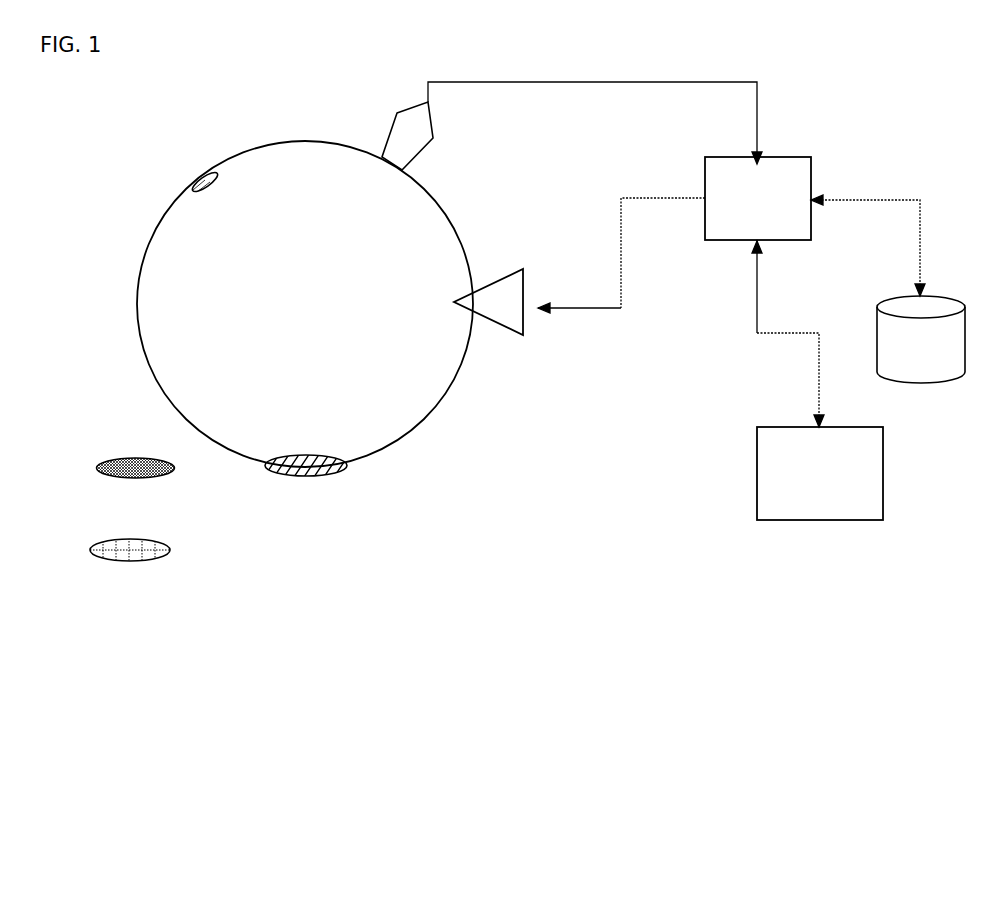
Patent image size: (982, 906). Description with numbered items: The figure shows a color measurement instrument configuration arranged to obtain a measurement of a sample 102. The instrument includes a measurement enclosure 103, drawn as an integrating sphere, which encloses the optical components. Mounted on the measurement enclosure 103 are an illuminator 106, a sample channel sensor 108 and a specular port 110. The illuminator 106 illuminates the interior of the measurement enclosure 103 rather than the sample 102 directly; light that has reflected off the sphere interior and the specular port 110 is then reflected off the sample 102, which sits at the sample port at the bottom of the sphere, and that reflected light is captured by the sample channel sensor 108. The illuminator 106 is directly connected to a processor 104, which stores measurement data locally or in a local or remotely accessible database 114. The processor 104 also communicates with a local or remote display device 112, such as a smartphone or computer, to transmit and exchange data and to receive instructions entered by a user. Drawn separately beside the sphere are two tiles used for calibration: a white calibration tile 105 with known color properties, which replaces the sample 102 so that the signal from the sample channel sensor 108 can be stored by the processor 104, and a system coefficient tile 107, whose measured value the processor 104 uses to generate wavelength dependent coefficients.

The sample 102 is at (307, 477).
The measurement enclosure 103 is at (294, 304).
The processor 104 is at (758, 198).
The calibration tile 105 is at (130, 562).
The illuminator 106 is at (488, 302).
The system coefficient tile 107 is at (136, 484).
The sample channel sensor 108 is at (407, 136).
The specular port 110 is at (195, 174).
The display device 112 is at (820, 473).
The database 114 is at (921, 339).